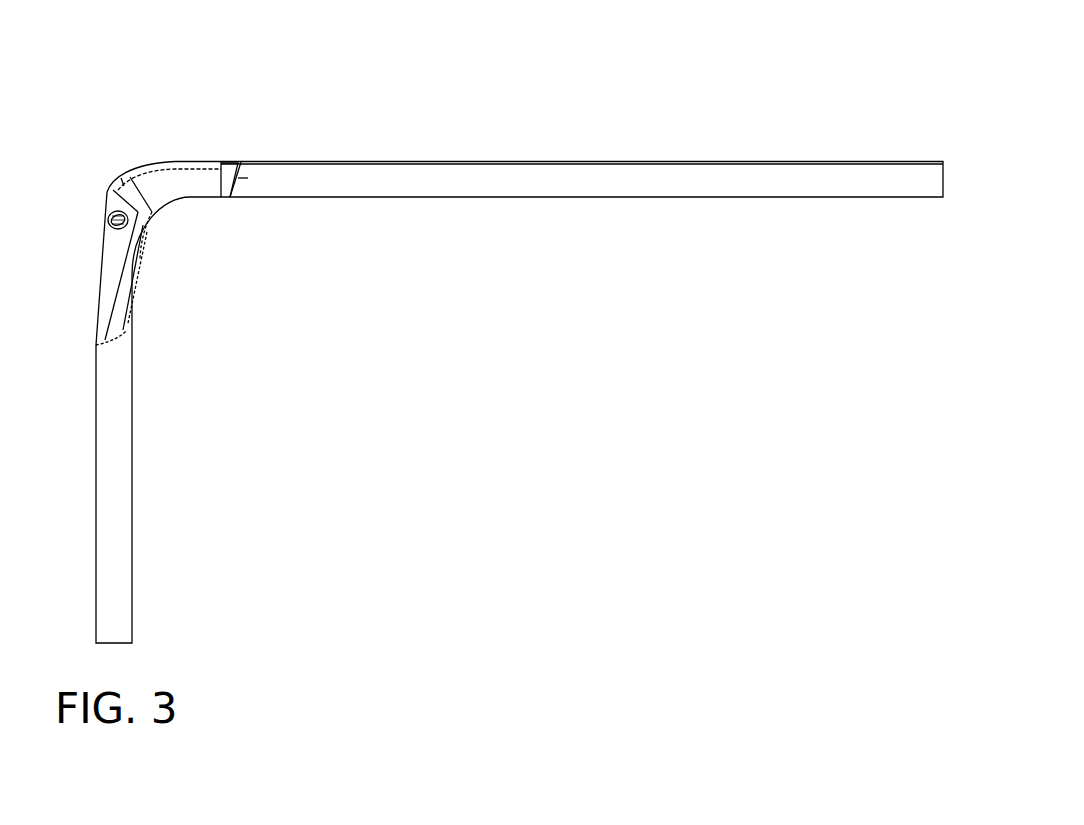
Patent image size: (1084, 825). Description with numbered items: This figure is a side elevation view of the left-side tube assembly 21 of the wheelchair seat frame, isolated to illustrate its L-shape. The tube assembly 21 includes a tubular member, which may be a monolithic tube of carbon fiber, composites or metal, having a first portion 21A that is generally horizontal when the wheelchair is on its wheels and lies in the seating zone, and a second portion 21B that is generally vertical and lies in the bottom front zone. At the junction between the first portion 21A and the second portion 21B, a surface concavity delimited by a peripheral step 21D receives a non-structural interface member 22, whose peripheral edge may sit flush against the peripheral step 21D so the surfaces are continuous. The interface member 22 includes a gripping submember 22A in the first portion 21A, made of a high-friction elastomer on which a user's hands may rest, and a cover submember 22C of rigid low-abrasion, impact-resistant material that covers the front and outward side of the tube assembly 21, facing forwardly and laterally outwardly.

The tube assembly 21 is at (397, 223).
The first portion 21A is at (490, 172).
The second portion 21B is at (115, 462).
The peripheral step 21D is at (133, 297).
The interface member 22 is at (203, 157).
The gripping submember 22A is at (229, 160).
The cover submember 22C is at (97, 253).